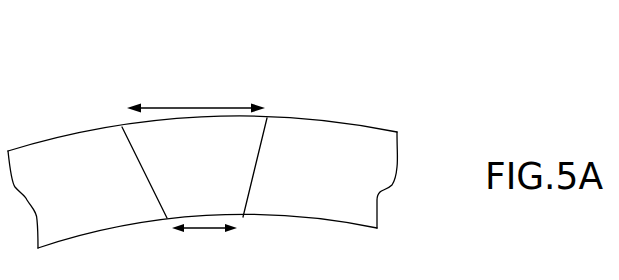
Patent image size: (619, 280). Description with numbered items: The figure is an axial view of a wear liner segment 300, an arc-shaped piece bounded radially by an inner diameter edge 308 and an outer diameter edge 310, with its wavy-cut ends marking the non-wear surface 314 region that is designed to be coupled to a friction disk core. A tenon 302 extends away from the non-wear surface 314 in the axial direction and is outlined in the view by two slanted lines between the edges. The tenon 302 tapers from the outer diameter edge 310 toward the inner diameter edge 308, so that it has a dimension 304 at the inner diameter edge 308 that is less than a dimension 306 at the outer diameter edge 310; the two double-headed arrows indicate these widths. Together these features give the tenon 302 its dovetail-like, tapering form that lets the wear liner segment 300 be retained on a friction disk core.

The wear liner segment 300 is at (275, 65).
The tenon 302 is at (182, 133).
The dimension at inner diameter edge 304 is at (200, 225).
The dimension at outer diameter edge 306 is at (203, 107).
The inner diameter edge 308 is at (343, 218).
The outer diameter edge 310 is at (330, 121).
The non-wear surface 314 is at (83, 131).